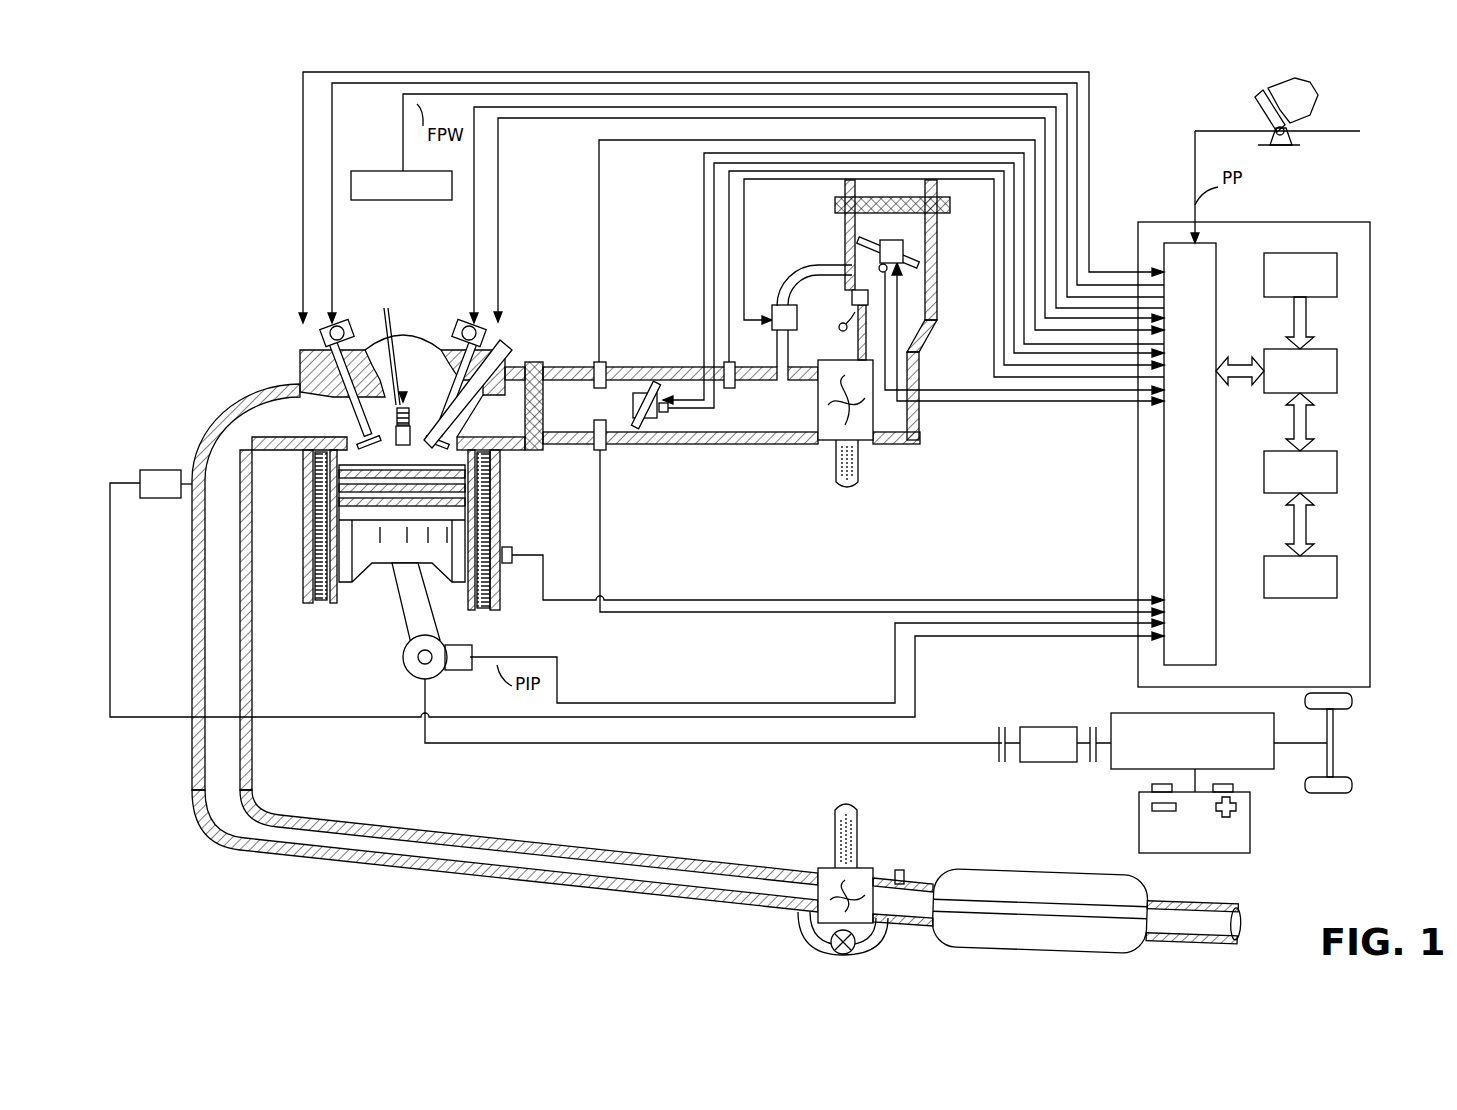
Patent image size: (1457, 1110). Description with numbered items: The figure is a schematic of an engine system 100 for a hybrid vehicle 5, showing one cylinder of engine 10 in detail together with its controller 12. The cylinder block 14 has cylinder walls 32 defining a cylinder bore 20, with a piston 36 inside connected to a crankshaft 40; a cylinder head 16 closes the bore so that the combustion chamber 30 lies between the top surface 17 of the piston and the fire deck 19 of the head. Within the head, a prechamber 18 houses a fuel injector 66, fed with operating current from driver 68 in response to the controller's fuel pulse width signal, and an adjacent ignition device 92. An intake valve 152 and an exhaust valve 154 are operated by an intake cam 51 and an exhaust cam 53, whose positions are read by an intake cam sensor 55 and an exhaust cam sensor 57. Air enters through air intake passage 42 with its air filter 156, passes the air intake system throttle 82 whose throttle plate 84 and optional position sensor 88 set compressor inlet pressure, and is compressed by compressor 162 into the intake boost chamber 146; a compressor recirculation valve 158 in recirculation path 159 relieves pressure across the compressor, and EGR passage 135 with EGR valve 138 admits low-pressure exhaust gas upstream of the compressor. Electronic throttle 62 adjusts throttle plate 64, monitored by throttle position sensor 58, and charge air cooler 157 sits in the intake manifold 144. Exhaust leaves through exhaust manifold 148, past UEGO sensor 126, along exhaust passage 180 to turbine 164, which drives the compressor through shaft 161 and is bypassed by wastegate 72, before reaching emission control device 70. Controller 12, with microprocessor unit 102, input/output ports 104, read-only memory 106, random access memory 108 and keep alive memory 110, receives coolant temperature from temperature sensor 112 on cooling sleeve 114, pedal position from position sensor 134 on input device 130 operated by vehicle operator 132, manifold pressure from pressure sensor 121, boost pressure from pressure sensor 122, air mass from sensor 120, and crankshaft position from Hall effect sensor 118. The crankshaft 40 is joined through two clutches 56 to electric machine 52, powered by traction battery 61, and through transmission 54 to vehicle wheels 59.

The engine system 100 is at (150, 128).
The engine 10 is at (228, 286).
The vehicle 5 is at (1380, 724).
The electronic engine controller 12 is at (1368, 222).
The input/output ports 104 is at (1216, 250).
The read-only memory 106 is at (1337, 270).
The microprocessor unit 102 is at (1337, 368).
The random access memory 108 is at (1337, 470).
The keep alive memory 110 is at (1337, 574).
The input device 130 is at (1258, 112).
The vehicle operator 132 is at (1318, 95).
The position sensor 134 is at (1300, 133).
The driver 68 is at (388, 171).
The exhaust manifold 148 is at (505, 648).
The exhaust passage 180 is at (452, 898).
The exhaust valve 154 is at (355, 425).
The UEGO sensor 126 is at (140, 470).
The cylinder head 16 is at (522, 352).
The prechamber 18 is at (437, 345).
The intake valve 152 is at (462, 412).
The fire deck 19 is at (498, 372).
The exhaust cam sensor 57 is at (322, 333).
The exhaust cam 53 is at (345, 318).
The intake cam sensor 55 is at (482, 340).
The intake cam 51 is at (462, 318).
The fuel injector 66 is at (412, 330).
The ignition device 92 is at (383, 350).
The cylinder block 14 is at (298, 508).
The cooling sleeve 114 is at (495, 586).
The combustion chamber 30 is at (322, 540).
The top surface of piston 17 is at (340, 560).
The cylinder bore 20 is at (290, 632).
The cylinder walls 32 is at (342, 590).
The temperature sensor 112 is at (512, 550).
The piston 36 is at (385, 585).
The crankshaft 40 is at (410, 678).
The Hall effect sensor 118 is at (456, 670).
The intake manifold 144 is at (731, 405).
The intake boost chamber 146 is at (738, 412).
The charge air cooler 157 is at (540, 452).
The pressure sensor 121 is at (603, 362).
The air mass sensor 120 is at (606, 450).
The pressure sensor 122 is at (735, 372).
The throttle plate 64 is at (657, 393).
The electronic throttle 62 is at (652, 382).
The throttle position sensor 58 is at (665, 412).
The compressor 162 is at (873, 440).
The shaft 161 is at (858, 478).
The air intake passage 42 is at (891, 310).
The air filter 156 is at (950, 205).
The throttle plate 84 is at (862, 240).
The air intake system throttle 82 is at (870, 252).
The position sensor 88 is at (880, 265).
The EGR valve 138 is at (852, 297).
The compressor recirculation valve 158 is at (778, 305).
The compressor recirculation path 159 is at (840, 300).
The EGR passage 135 is at (843, 331).
The turbine 164 is at (820, 868).
The wastegate 72 is at (830, 945).
The emission control device 70 is at (933, 940).
The clutch 56 is at (999, 732).
The electric machine 52 is at (1050, 762).
The transmission 54 is at (1250, 769).
The vehicle wheels 59 is at (1335, 793).
The traction battery 61 is at (1190, 853).